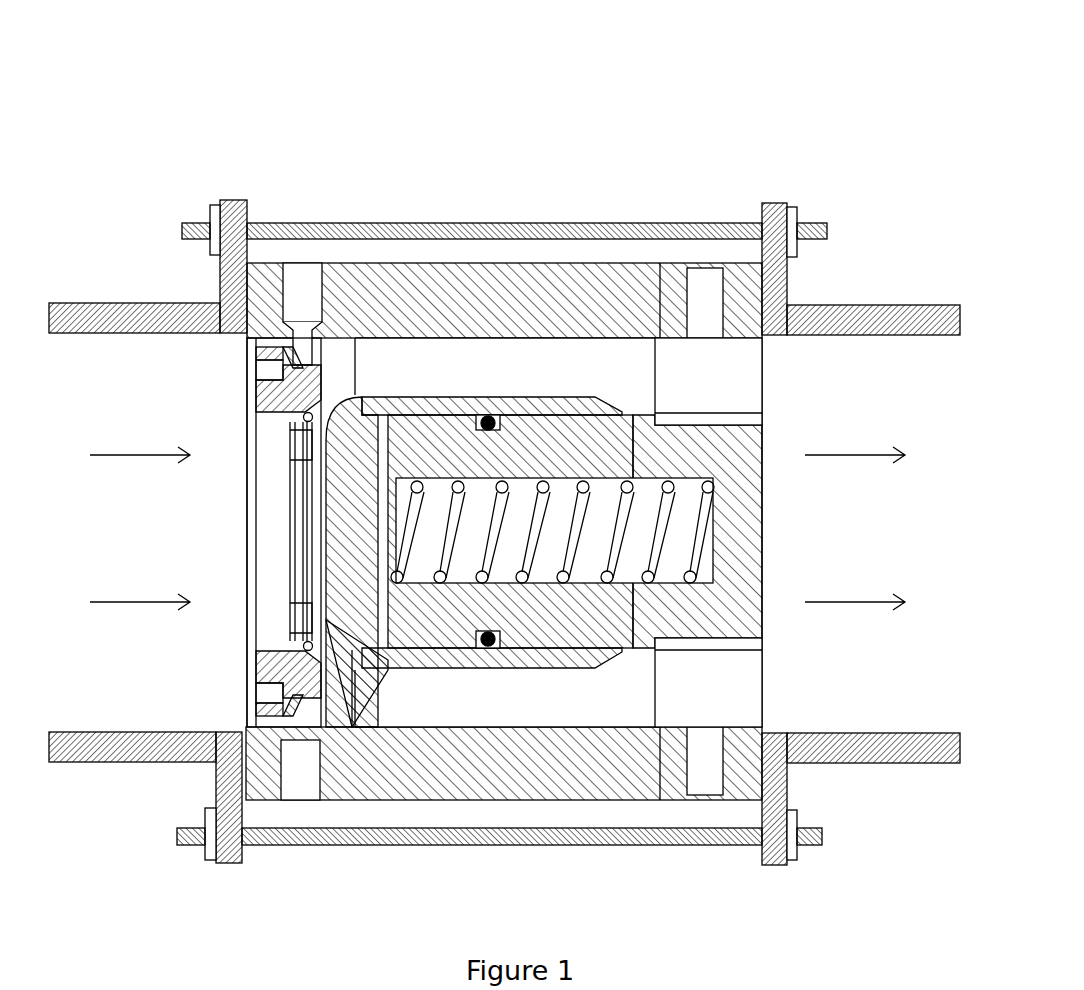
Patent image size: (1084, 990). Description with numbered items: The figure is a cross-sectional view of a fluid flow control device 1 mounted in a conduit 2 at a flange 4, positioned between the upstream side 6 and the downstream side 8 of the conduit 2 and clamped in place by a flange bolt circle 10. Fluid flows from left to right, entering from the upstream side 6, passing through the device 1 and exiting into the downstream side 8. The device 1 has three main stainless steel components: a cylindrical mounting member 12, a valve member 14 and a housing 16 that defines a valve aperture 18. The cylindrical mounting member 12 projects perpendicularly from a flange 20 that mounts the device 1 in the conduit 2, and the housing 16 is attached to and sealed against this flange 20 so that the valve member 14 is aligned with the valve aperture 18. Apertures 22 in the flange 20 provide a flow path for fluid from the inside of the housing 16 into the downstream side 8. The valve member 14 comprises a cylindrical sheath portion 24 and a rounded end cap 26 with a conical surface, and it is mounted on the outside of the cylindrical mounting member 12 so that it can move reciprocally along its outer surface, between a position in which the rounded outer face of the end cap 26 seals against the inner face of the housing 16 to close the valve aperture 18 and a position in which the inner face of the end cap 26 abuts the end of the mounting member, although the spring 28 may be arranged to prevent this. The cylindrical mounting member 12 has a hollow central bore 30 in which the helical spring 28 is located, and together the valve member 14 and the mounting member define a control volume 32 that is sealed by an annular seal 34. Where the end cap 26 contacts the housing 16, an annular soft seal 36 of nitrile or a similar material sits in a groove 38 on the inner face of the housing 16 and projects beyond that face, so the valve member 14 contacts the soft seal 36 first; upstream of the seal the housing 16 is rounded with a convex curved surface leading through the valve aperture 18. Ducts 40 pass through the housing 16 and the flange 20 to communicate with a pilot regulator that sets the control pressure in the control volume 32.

The fluid flow control device 1 is at (276, 101).
The conduit 2 is at (148, 312).
The flange 4 is at (770, 215).
The upstream side 6 is at (123, 536).
The downstream side 8 is at (847, 541).
The flange bolt circle 10 is at (560, 224).
The cylindrical mounting member 12 is at (722, 432).
The valve member 14 is at (372, 654).
The housing 16 is at (262, 388).
The valve aperture 18 is at (268, 504).
The flange 20 is at (740, 306).
The apertures 22 is at (712, 679).
The cylindrical sheath portion 24 is at (567, 655).
The rounded end cap 26 is at (325, 568).
The helical spring 28 is at (445, 522).
The hollow central bore 30 is at (508, 522).
The control volume 32 is at (648, 488).
The annular seal 34 is at (488, 418).
The soft seal 36 is at (306, 422).
The groove 38 is at (303, 417).
The ducts 40 is at (702, 275).